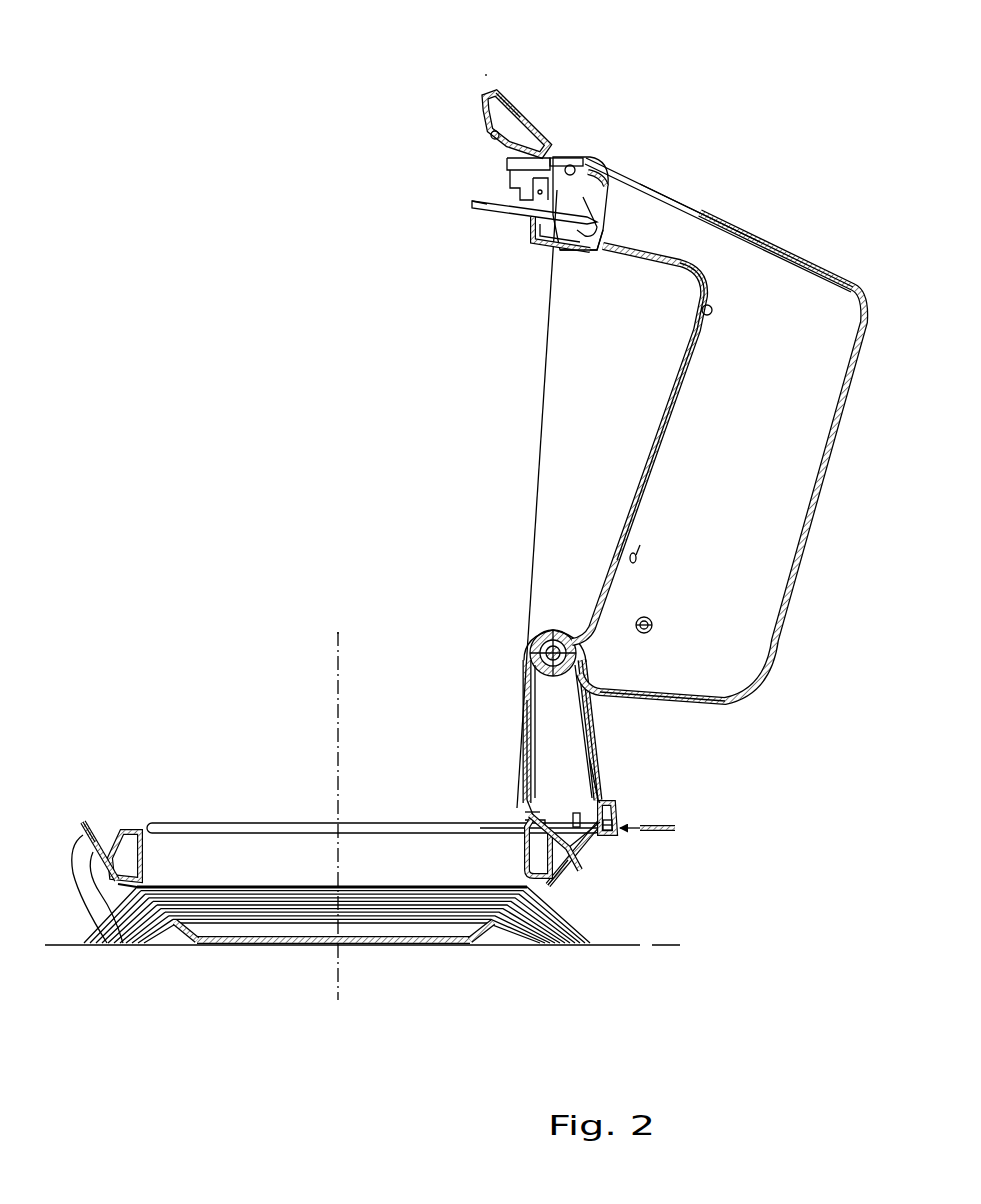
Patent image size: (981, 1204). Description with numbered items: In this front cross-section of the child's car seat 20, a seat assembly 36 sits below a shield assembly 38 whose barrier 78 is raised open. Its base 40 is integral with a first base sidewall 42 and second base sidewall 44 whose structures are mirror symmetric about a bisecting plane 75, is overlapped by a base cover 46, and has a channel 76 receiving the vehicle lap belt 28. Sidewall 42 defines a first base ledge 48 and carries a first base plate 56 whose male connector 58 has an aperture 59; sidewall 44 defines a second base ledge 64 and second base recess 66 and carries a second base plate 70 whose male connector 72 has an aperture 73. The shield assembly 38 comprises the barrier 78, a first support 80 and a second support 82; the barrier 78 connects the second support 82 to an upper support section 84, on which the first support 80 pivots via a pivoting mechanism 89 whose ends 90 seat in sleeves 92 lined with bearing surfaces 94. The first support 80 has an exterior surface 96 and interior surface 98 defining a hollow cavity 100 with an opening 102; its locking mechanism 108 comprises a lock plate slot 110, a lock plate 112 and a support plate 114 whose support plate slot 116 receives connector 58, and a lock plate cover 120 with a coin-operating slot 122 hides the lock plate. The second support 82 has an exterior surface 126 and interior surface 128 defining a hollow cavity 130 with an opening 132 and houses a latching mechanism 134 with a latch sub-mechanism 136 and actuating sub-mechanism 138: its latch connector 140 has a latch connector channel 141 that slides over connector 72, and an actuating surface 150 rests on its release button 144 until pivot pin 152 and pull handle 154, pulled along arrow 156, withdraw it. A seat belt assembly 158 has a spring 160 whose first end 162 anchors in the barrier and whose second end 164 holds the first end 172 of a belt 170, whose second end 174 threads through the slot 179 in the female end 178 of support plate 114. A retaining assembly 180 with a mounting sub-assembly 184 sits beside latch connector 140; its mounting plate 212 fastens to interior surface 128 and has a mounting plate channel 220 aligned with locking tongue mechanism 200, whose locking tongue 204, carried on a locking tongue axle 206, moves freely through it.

The child's car seat 20 is at (305, 437).
The lap belt 28 is at (322, 886).
The seat assembly 36 is at (360, 990).
The shield assembly 38 is at (772, 760).
The base 40 is at (318, 955).
The first base sidewall 42 is at (480, 945).
The second base sidewall 44 is at (185, 945).
The base cover 46 is at (247, 823).
The first base ledge 48 is at (525, 862).
The first base plate 56 is at (566, 866).
The first base plate male connector 58 is at (582, 858).
The aperture 59 is at (590, 848).
The second base ledge 64 is at (116, 850).
The second base recess 66 is at (112, 848).
The second base plate 70 is at (100, 836).
The second base plate male connector 72 is at (130, 935).
The aperture 73 is at (110, 935).
The plane 75 is at (336, 680).
The channel 76 is at (120, 885).
The barrier 78 is at (738, 716).
The first support 80 is at (594, 712).
The second support 82 is at (792, 240).
The upper support section 84 is at (712, 703).
The pivoting mechanism 89 is at (555, 625).
The ends 90 is at (560, 645).
The sleeves 92 is at (541, 648).
The bearing surfaces 94 is at (531, 655).
The exterior surface 96 is at (588, 757).
The interior surface 98 is at (576, 757).
The hollow cavity 100 is at (578, 713).
The opening 102 is at (522, 722).
The locking mechanism 108 is at (576, 811).
The lock plate slot 110 is at (614, 818).
The lock plate 112 is at (606, 806).
The support plate 114 is at (520, 823).
The support plate slot 116 is at (529, 805).
The lock plate cover 120 is at (618, 826).
The coin-operating slot 122 is at (678, 827).
The exterior surface 126 is at (742, 216).
The interior surface 128 is at (702, 206).
The hollow cavity 130 is at (758, 280).
The opening 132 is at (602, 248).
The latching mechanism 134 is at (590, 162).
The latch sub-mechanism 136 is at (608, 183).
The actuating sub-mechanism 138 is at (484, 126).
The latch connector 140 is at (573, 157).
The latch connector channel 141 is at (500, 178).
The release button 144 is at (558, 155).
The actuating surface 150 is at (556, 150).
The pivot pin 152 is at (520, 150).
The pull handle 154 is at (484, 118).
The arrow 156 is at (503, 77).
The seat belt assembly 158 is at (703, 406).
The spring 160 is at (648, 615).
The first end 162 is at (640, 632).
The second end 164 is at (637, 566).
The belt 170 is at (668, 465).
The first end 172 is at (640, 548).
The second end 174 is at (524, 770).
The female end 178 is at (524, 820).
The slot 179 is at (524, 812).
The retaining assembly 180 is at (662, 180).
The mounting sub-assembly 184 is at (522, 190).
The locking tongue mechanism 200 is at (487, 215).
The locking tongue 204 is at (478, 206).
The locking tongue axle 206 is at (560, 240).
The mounting plate 212 is at (536, 235).
The mounting plate channel 220 is at (528, 218).